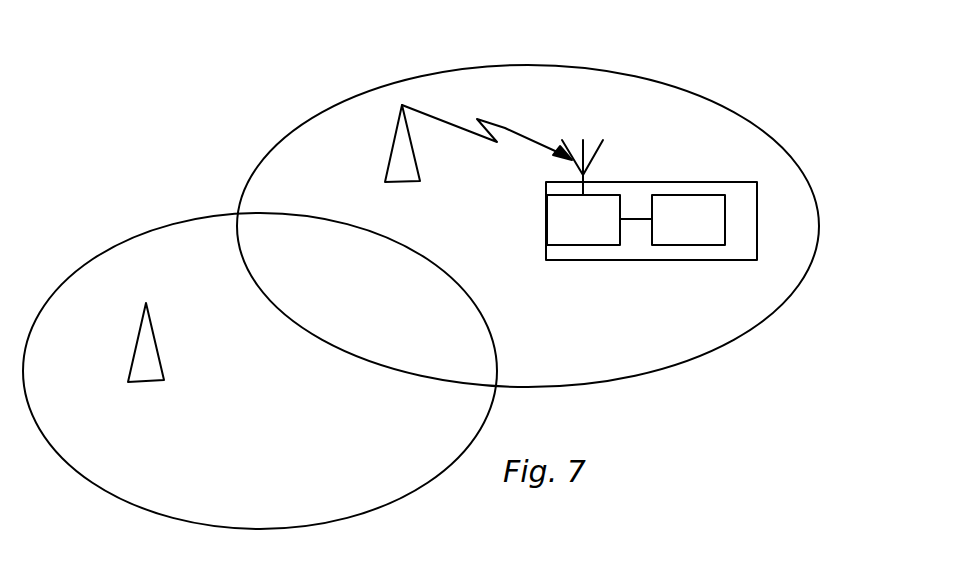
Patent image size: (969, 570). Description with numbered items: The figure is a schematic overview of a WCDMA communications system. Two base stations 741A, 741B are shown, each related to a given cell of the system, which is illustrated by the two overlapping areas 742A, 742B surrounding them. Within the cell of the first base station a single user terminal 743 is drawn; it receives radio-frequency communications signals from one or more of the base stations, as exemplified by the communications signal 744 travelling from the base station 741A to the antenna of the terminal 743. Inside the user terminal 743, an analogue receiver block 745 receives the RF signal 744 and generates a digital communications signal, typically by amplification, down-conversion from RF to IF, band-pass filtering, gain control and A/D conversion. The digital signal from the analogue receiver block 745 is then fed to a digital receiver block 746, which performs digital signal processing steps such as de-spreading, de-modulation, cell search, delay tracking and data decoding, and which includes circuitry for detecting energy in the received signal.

The base station 741A is at (319, 124).
The base station 741B is at (91, 299).
The cell area 742A is at (499, 226).
The cell area 742B is at (260, 351).
The user terminal 743 is at (651, 199).
The communications signal 744 is at (481, 92).
The analogue receiver block 745 is at (560, 256).
The digital receiver block 746 is at (665, 256).